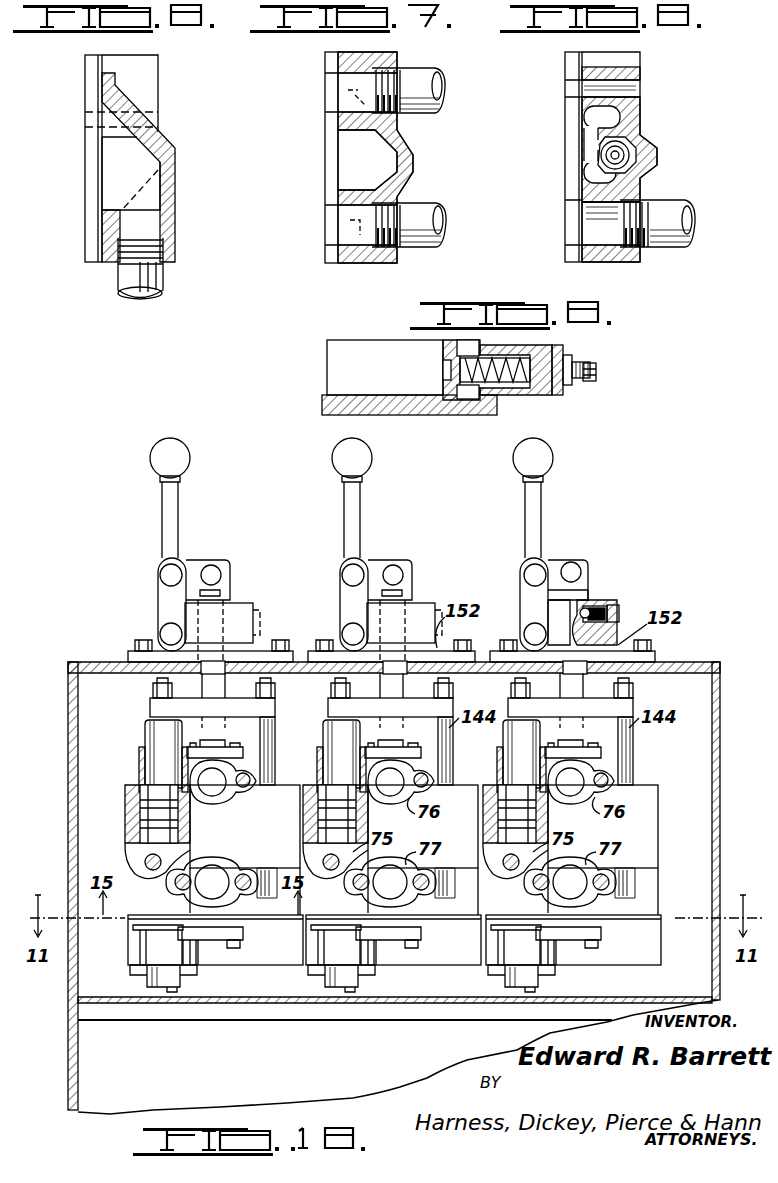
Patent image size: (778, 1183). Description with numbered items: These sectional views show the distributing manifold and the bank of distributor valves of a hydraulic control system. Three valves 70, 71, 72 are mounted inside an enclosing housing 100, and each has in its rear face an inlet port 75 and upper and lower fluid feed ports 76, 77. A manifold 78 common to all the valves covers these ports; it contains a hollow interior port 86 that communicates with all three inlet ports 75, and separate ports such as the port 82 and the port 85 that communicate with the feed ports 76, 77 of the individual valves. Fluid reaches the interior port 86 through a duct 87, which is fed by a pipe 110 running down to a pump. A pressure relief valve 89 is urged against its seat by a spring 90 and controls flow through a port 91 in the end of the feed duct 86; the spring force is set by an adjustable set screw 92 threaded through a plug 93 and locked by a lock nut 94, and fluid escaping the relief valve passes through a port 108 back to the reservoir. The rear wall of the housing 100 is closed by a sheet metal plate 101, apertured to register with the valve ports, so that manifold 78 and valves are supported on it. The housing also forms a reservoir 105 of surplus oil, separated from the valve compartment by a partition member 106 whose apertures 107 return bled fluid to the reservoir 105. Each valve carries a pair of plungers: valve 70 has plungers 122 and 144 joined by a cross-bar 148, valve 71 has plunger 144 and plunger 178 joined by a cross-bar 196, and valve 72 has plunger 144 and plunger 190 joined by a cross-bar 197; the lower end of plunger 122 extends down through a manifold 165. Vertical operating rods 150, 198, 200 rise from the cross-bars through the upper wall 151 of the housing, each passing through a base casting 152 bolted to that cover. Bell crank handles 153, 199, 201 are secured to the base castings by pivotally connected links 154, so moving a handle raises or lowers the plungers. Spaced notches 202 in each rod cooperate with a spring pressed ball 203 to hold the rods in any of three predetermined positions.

In FIG. 10, the valve 70 is at (280, 797).
In FIG. 10, the valve 71 is at (458, 797).
In FIG. 10, the valve 72 is at (648, 797).
In FIG. 10, the inlet port 75 is at (175, 852).
In FIG. 10, the upper fluid feed port 76 is at (232, 797).
In FIG. 10, the lower fluid feed port 77 is at (228, 865).
In FIG. 6, the manifold 78 is at (175, 152).
In FIG. 7, the manifold 78 is at (413, 158).
In FIG. 8, the manifold 78 is at (655, 173).
In FIG. 9, the manifold 78 is at (378, 412).
In FIG. 7, the manifold port 82 is at (392, 80).
In FIG. 7, the manifold port 85 is at (398, 250).
In FIG. 8, the manifold port 85 is at (642, 250).
In FIG. 6, the hollow interior port 86 is at (131, 173).
In FIG. 7, the hollow interior port 86 is at (367, 160).
In FIG. 9, the hollow interior port 86 is at (385, 367).
In FIG. 6, the duct 87 is at (126, 236).
In FIG. 9, the pressure relief valve 89 is at (450, 400).
In FIG. 8, the spring 90 is at (648, 150).
In FIG. 9, the spring 90 is at (490, 396).
In FIG. 9, the port 91 is at (445, 366).
In FIG. 9, the adjustable set screw 92 is at (596, 366).
In FIG. 9, the plug 93 is at (564, 350).
In FIG. 9, the lock nut 94 is at (568, 386).
In FIG. 10, the enclosing housing 100 is at (68, 765).
In FIG. 6, the sheet metal plate 101 is at (93, 262).
In FIG. 7, the sheet metal plate 101 is at (325, 258).
In FIG. 8, the sheet metal plate 101 is at (575, 250).
In FIG. 10, the reservoir 105 is at (398, 1057).
In FIG. 10, the partition member 106 is at (108, 1003).
In FIG. 10, the apertures 107 is at (258, 1020).
In FIG. 8, the port 108 is at (582, 162).
In FIG. 9, the port 108 is at (460, 345).
In FIG. 6, the pipe 110 is at (158, 288).
In FIG. 10, the valve plunger 122 is at (148, 737).
In FIG. 10, the valve plunger 144 is at (270, 728).
In FIG. 10, the cross-bar 148 is at (240, 700).
In FIG. 10, the operating rod 150 is at (225, 595).
In FIG. 10, the upper wall 151 is at (100, 668).
In FIG. 10, the base casting 152 is at (255, 648).
In FIG. 10, the operating handle 153 is at (178, 524).
In FIG. 10, the pivotally connected links 154 is at (160, 600).
In FIG. 10, the manifold 165 is at (400, 955).
In FIG. 10, the plunger 178 is at (358, 740).
In FIG. 10, the valve plunger 190 is at (538, 740).
In FIG. 10, the cross-bar 196 is at (420, 700).
In FIG. 10, the cross-bar 197 is at (600, 700).
In FIG. 10, the operating rod 198 is at (410, 598).
In FIG. 10, the handle 199 is at (360, 524).
In FIG. 10, the operating rod 200 is at (584, 602).
In FIG. 10, the handle 201 is at (541, 522).
In FIG. 10, the spaced notches 202 is at (600, 606).
In FIG. 10, the spring pressed ball 203 is at (619, 612).